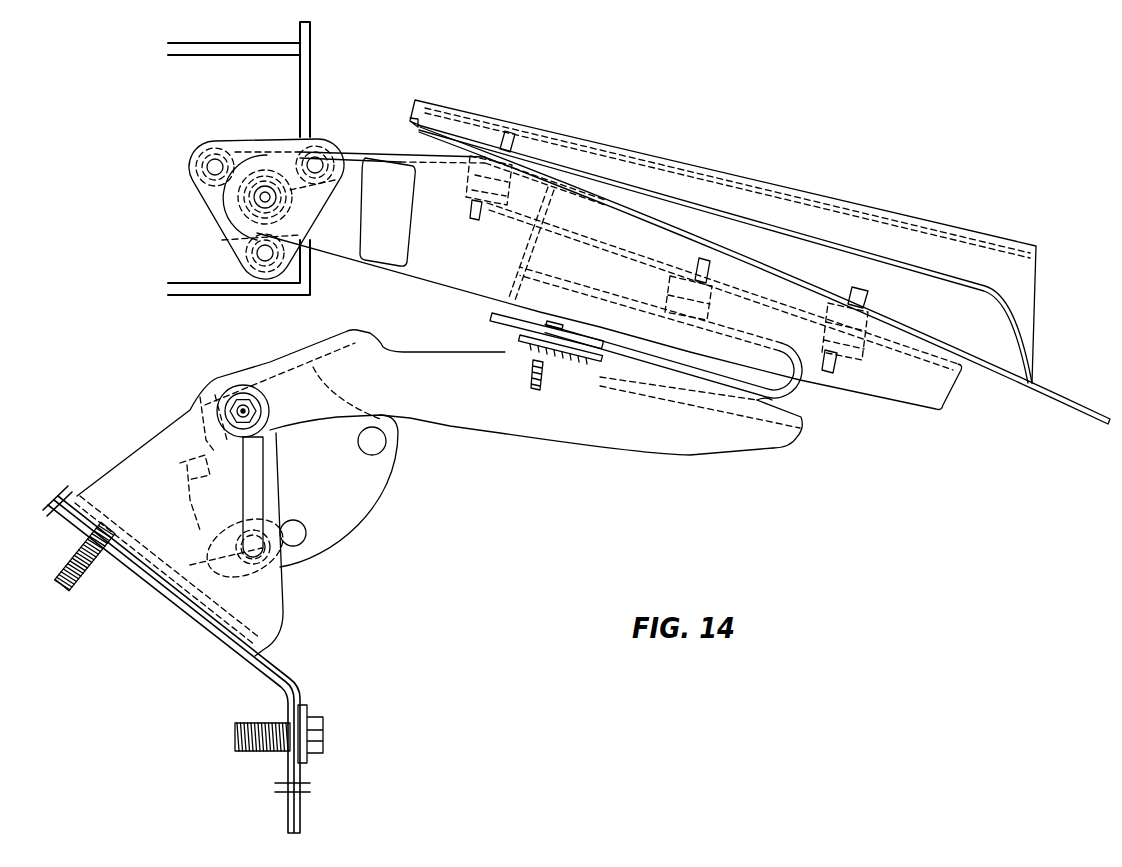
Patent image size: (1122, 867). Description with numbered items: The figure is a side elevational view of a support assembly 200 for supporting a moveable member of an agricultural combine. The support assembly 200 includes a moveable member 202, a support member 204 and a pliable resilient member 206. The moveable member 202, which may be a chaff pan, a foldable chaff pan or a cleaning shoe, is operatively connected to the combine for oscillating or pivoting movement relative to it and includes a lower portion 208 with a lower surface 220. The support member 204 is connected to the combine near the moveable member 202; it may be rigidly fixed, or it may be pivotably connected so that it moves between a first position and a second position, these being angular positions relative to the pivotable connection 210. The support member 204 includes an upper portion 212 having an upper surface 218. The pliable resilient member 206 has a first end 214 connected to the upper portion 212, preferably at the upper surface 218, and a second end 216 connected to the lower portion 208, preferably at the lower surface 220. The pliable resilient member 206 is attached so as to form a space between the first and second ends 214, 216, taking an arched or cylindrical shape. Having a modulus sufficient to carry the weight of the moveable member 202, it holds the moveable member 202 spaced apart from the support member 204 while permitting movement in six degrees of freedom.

The support assembly 200 is at (968, 181).
The moveable member 202 is at (593, 129).
The support member 204 is at (720, 458).
The pliable resilient member 206 is at (798, 385).
The lower portion 208 is at (973, 386).
The pivotable connection 210 is at (242, 367).
The upper portion 212 is at (792, 408).
The first end 214 is at (491, 318).
The second end 216 is at (657, 285).
The upper surface 218 is at (757, 400).
The lower surface 220 is at (602, 247).